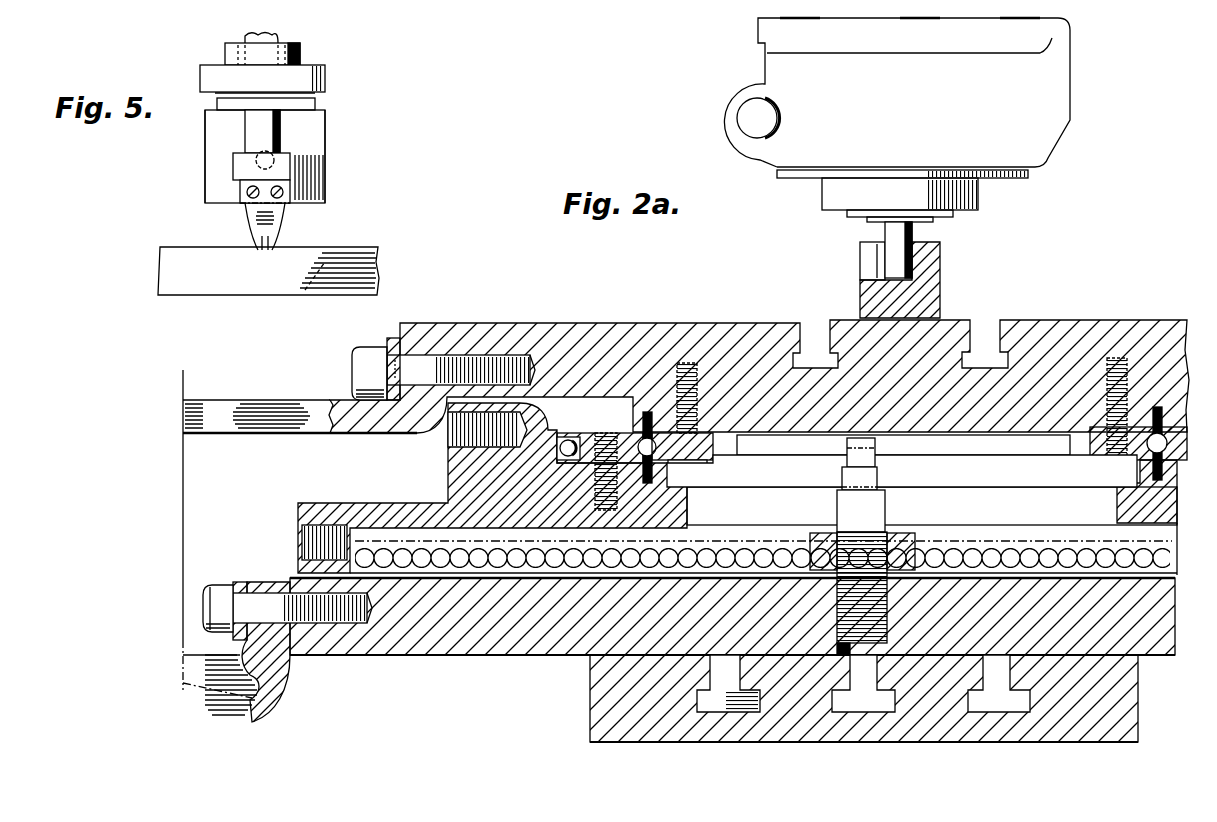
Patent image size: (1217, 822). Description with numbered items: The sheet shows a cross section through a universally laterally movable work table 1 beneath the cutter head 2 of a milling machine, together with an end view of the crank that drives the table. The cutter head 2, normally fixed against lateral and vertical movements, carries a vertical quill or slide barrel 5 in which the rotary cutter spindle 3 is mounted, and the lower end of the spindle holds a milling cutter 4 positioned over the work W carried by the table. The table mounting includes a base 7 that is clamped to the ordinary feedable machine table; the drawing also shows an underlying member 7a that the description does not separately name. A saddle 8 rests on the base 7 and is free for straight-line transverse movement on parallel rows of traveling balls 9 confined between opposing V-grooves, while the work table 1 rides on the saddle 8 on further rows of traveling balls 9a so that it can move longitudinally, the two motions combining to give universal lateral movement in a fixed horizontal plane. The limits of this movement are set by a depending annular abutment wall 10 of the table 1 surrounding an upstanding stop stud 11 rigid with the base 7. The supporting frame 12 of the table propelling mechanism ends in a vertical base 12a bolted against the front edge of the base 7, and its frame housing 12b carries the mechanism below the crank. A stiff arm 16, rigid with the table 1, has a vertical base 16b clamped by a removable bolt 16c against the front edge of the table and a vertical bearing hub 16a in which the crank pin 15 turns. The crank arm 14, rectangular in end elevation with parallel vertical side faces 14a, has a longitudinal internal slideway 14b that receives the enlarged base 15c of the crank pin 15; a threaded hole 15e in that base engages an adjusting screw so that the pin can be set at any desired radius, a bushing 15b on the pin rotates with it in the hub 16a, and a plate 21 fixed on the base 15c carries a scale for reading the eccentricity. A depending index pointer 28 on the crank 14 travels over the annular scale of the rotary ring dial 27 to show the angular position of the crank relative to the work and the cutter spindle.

In FIG. 2A, the work table 1 is at (683, 323).
In FIG. 2A, the cutter head 2 is at (1062, 128).
In FIG. 2A, the cutter spindle 3 is at (860, 216).
In FIG. 2A, the cutter 4 is at (893, 255).
In FIG. 2A, the work W is at (942, 280).
In FIG. 2A, the quill or slide barrel 5 is at (978, 197).
In FIG. 2A, the base 7 is at (521, 648).
In FIG. 2A, the base 7a is at (881, 742).
In FIG. 2A, the saddle 8 is at (1122, 498).
In FIG. 2A, the traveling balls 9 is at (511, 546).
In FIG. 2A, the traveling balls 9a is at (563, 433).
In FIG. 2A, the annular abutment wall 10 is at (745, 460).
In FIG. 2A, the stop stud 11 is at (880, 465).
In FIG. 2A, the supporting frame 12 is at (248, 700).
In FIG. 2A, the vertical base 12a is at (278, 593).
In FIG. 2A, the frame housing 12b is at (214, 585).
In FIG. 2A, the arm 16 is at (262, 418).
In FIG. 5, the bearing hub 16a is at (296, 68).
In FIG. 2A, the vertical base 16b is at (429, 337).
In FIG. 2A, the bolt 16c is at (395, 340).
In FIG. 5, the crank arm 14 is at (220, 146).
In FIG. 5, the side faces 14a is at (206, 117).
In FIG. 5, the slideway 14b is at (236, 167).
In FIG. 5, the crank pin 15 is at (280, 43).
In FIG. 5, the bushing 15b is at (308, 97).
In FIG. 5, the base 15c is at (280, 136).
In FIG. 5, the screw threaded hole 15e is at (292, 160).
In FIG. 5, the plate 21 is at (290, 112).
In FIG. 5, the ring dial 27 is at (338, 256).
In FIG. 5, the index pointer 28 is at (276, 229).